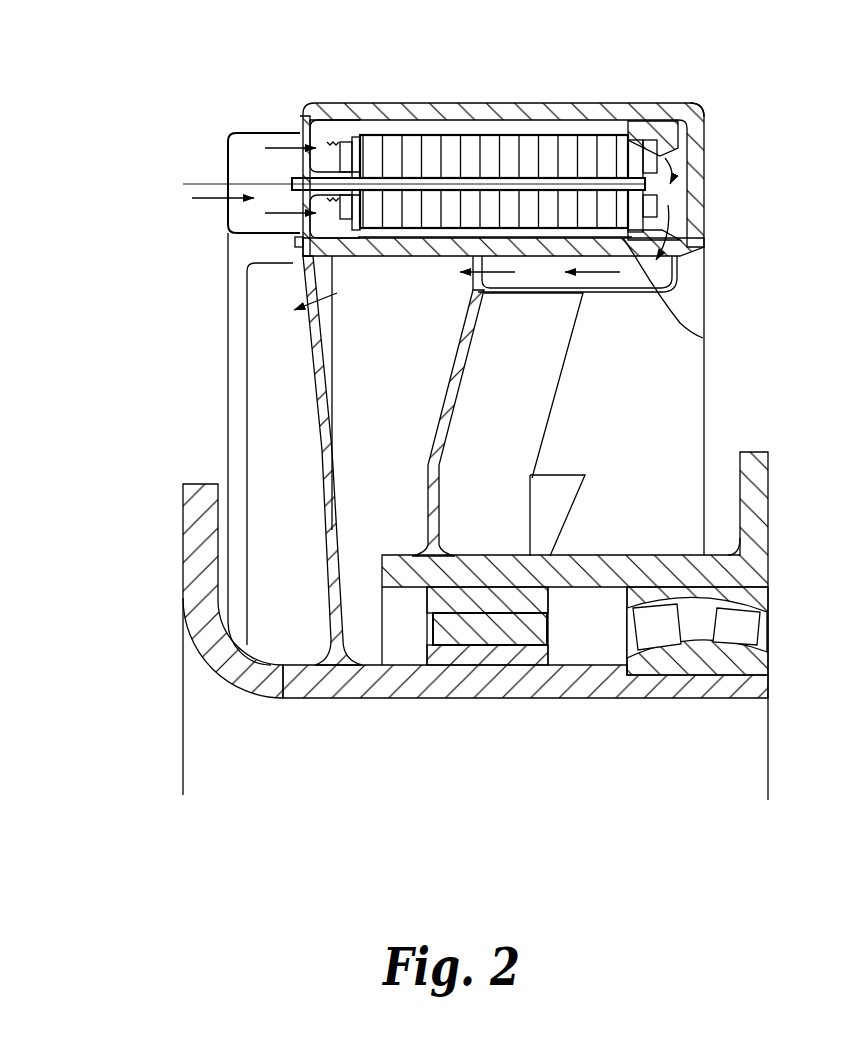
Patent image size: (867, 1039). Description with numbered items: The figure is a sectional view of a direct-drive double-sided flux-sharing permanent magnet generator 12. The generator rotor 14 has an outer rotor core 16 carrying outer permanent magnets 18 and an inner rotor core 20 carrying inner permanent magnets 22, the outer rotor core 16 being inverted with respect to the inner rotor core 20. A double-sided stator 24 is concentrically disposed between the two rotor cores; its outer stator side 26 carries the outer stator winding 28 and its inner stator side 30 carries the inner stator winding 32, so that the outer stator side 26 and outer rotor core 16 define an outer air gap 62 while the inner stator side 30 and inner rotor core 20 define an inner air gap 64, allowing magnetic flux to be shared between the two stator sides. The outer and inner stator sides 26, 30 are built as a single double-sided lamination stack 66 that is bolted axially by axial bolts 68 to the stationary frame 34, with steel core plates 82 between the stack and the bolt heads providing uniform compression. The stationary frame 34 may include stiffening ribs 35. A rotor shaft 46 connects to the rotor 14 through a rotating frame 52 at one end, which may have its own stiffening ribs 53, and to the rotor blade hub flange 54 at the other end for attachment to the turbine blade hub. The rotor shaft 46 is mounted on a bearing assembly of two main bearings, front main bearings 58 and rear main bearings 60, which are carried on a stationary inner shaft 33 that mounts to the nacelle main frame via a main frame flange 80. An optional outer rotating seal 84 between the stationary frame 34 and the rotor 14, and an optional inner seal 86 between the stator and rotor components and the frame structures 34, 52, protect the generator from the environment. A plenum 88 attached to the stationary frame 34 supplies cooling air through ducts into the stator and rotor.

The PM generator 12 is at (106, 82).
The rotor 14 is at (697, 165).
The outer rotor core 16 is at (462, 125).
The outer permanent magnets 18 is at (464, 125).
The inner rotor core 20 is at (563, 238).
The inner permanent magnets 22 is at (703, 338).
The double-sided stator 24 is at (397, 135).
The outer stator side 26 is at (360, 135).
The outer stator winding 28 is at (687, 110).
The inner stator side 30 is at (366, 232).
The inner stator winding 32 is at (652, 202).
The stationary inner shaft 33 is at (278, 678).
The stationary frame 34 is at (308, 352).
The ribs 35 is at (272, 425).
The rotor shaft 46 is at (643, 555).
The rotating frame 52 is at (446, 418).
The ribs 53 is at (560, 343).
The rotor blade hub flange 54 is at (770, 497).
The front main bearings 58 is at (770, 606).
The rear main bearings 60 is at (545, 665).
The outer air gap 62 is at (662, 104).
The inner air gap 64 is at (690, 242).
The double-sided lamination stack 66 is at (443, 135).
The axial bolts 68 is at (500, 160).
The main frame flange 80 is at (183, 521).
The steel core plates 82 is at (677, 104).
The outer rotating seal 84 is at (336, 140).
The inner seal 86 is at (298, 244).
The plenum 88 is at (228, 173).